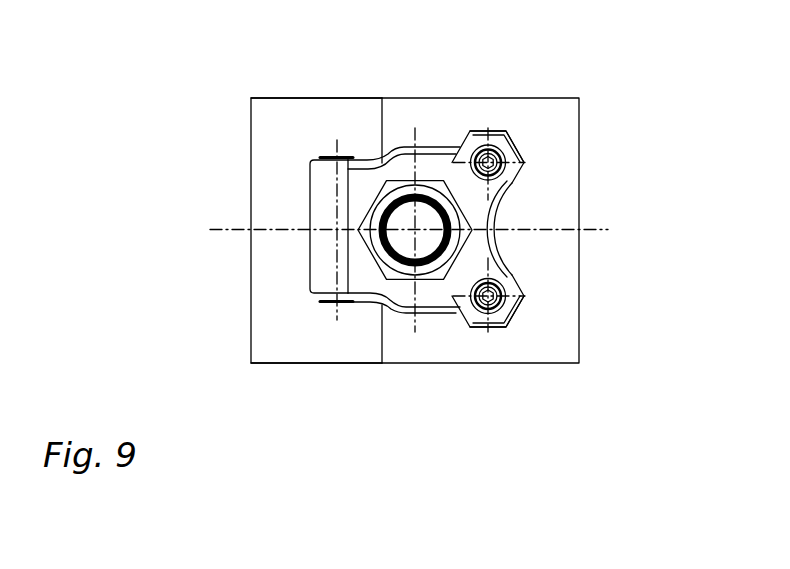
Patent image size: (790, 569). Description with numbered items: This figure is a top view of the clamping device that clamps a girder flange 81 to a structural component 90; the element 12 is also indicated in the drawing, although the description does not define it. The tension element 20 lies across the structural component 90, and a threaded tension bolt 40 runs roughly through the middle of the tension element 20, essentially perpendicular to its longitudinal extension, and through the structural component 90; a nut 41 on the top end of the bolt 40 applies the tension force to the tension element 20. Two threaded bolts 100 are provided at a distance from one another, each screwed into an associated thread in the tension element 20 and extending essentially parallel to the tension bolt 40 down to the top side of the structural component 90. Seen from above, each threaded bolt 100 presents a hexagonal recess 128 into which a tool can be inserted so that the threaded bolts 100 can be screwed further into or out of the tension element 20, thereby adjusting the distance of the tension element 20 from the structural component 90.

The fastening boss 12 is at (522, 305).
The tension element 20 is at (477, 208).
The bolt 40 is at (419, 222).
The nut 41 is at (398, 176).
The girder flange 81 is at (283, 132).
The structural component 90 is at (560, 140).
The threaded bolts 100 is at (489, 143).
The hexagonal recess 128 is at (501, 146).